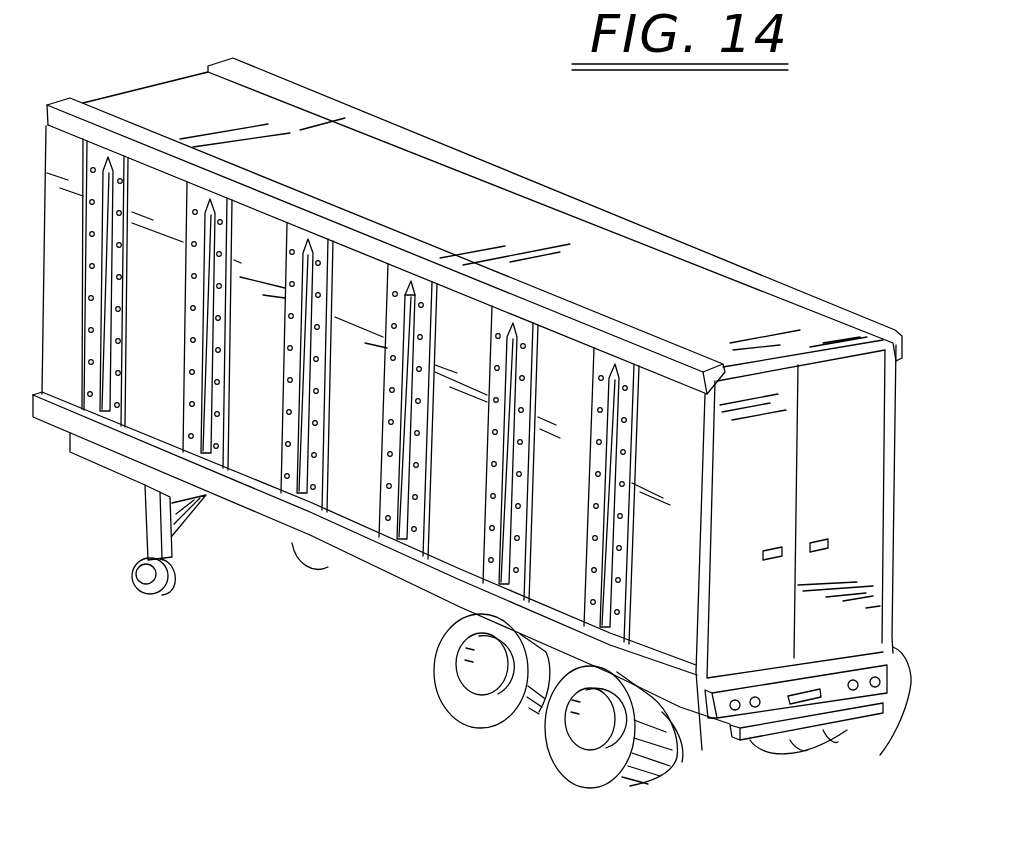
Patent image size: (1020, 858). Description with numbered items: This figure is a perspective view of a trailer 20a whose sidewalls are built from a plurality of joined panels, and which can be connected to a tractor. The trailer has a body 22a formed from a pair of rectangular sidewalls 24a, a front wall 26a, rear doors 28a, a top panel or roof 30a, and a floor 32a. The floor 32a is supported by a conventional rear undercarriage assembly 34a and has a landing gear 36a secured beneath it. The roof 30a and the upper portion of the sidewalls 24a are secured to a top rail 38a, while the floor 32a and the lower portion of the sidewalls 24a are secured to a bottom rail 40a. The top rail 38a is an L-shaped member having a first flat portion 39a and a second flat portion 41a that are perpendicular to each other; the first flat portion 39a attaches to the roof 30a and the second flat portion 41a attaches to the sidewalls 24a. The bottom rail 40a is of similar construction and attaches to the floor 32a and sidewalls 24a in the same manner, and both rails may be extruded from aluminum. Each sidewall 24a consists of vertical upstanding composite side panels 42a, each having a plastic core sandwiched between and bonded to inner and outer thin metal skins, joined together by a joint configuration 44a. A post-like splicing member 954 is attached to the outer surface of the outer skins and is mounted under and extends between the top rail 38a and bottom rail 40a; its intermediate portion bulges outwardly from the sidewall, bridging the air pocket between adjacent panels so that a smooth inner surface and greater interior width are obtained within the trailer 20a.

The trailer 20a is at (772, 218).
The body 22a is at (233, 103).
The sidewall 24a is at (446, 551).
The front wall 26a is at (47, 152).
The rear doors 28a is at (736, 502).
The top panel or roof 30a is at (590, 252).
The floor 32a is at (707, 722).
The rear undercarriage assembly 34a is at (590, 768).
The landing gear 36a is at (158, 535).
The top rail 38a is at (283, 194).
The first flat portion 39a is at (621, 338).
The bottom rail 40a is at (112, 440).
The second flat portion 41a is at (656, 372).
The composite side panel 42a is at (342, 371).
The joint configuration 44a is at (405, 280).
The splicing member 954 is at (405, 440).